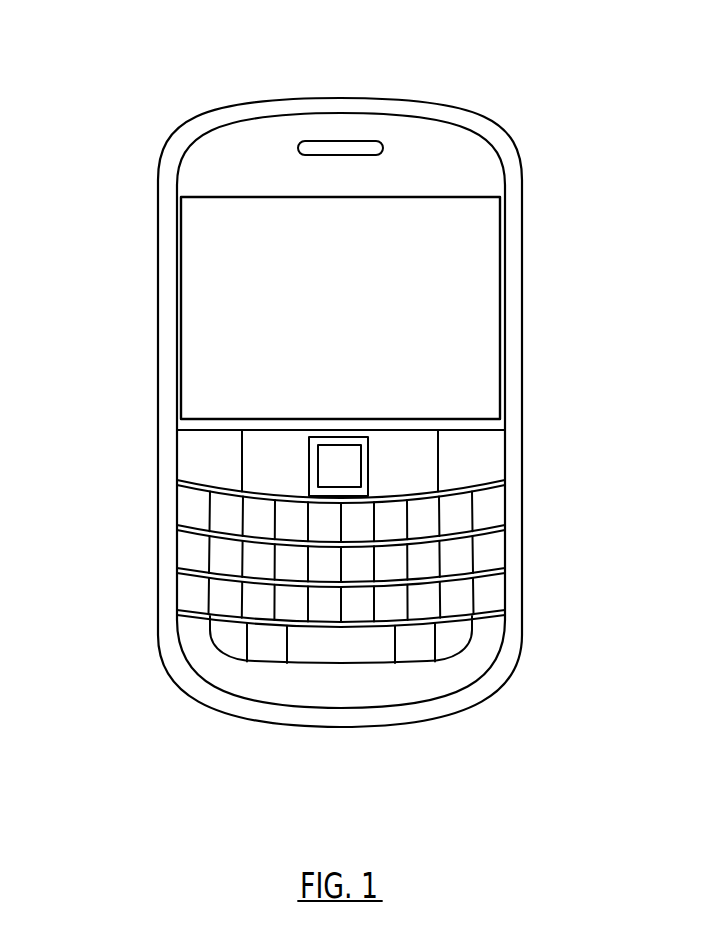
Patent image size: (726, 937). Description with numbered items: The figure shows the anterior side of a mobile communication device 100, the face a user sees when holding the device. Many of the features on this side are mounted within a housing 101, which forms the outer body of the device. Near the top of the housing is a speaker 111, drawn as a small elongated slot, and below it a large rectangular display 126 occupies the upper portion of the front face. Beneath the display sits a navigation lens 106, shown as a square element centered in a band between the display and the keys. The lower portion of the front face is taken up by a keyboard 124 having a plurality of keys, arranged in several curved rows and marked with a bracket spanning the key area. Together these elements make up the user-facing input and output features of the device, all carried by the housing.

The mobile communication device 100 is at (124, 86).
The housing 101 is at (158, 393).
The navigation lens 106 is at (368, 438).
The speaker 111 is at (335, 142).
The keyboard 124 is at (535, 678).
The display 126 is at (359, 335).